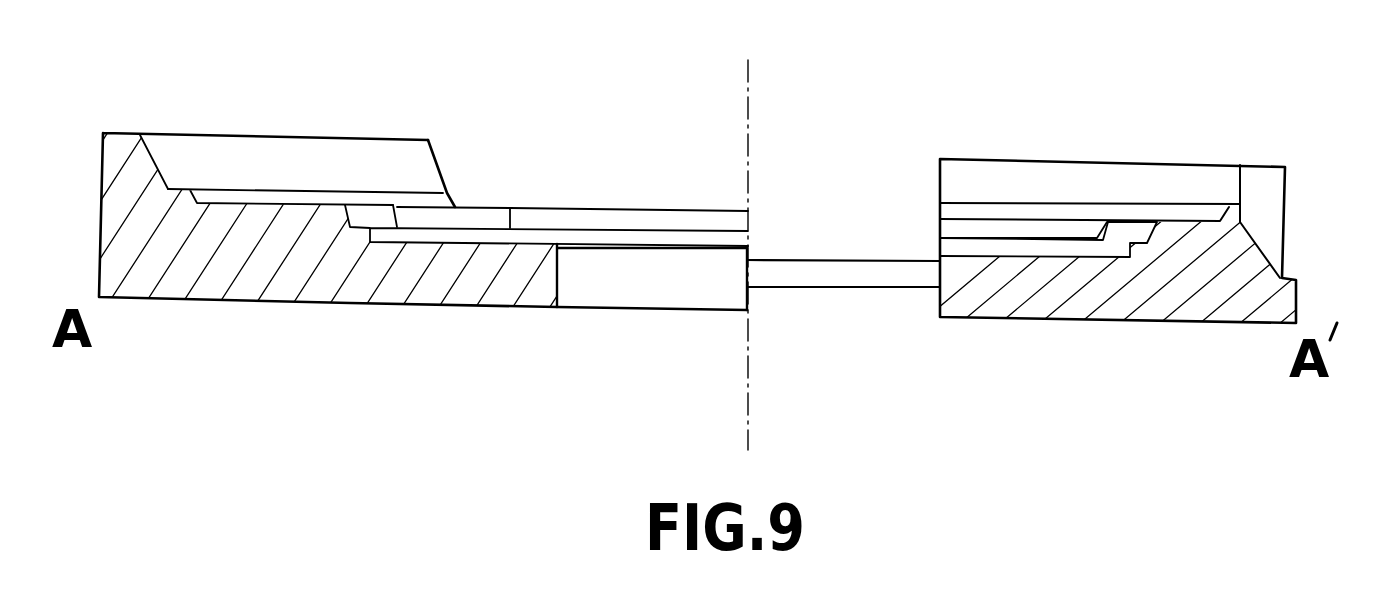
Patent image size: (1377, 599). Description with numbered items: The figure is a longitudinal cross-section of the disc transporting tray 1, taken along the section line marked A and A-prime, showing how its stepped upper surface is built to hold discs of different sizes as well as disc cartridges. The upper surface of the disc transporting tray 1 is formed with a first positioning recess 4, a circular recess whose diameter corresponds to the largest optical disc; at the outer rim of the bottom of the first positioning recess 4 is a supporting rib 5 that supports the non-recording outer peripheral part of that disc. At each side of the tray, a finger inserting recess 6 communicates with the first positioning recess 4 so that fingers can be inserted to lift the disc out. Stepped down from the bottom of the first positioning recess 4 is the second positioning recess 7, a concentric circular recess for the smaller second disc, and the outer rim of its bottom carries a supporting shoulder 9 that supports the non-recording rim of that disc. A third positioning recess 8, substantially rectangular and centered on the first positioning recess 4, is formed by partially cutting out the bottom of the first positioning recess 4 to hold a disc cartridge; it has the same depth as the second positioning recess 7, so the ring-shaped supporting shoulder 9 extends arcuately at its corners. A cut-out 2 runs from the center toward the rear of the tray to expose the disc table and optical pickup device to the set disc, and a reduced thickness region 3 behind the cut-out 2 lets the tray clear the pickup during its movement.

The disc transporting tray 1 is at (1192, 117).
The cut-out 2 is at (560, 280).
The reduced thickness region 3 is at (827, 277).
The first positioning recess 4 is at (155, 165).
The supporting rib 5 is at (183, 187).
The finger inserting recess 6 is at (437, 160).
The second positioning recess 7 is at (363, 205).
The third positioning recess 8 is at (490, 213).
The supporting shoulder 9 is at (610, 228).